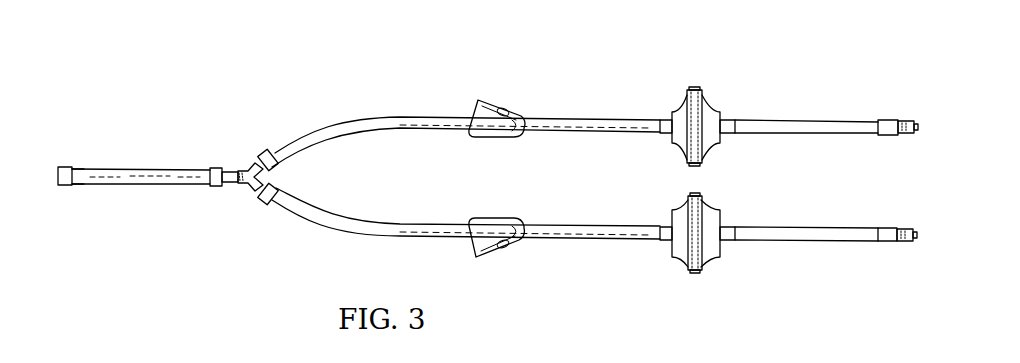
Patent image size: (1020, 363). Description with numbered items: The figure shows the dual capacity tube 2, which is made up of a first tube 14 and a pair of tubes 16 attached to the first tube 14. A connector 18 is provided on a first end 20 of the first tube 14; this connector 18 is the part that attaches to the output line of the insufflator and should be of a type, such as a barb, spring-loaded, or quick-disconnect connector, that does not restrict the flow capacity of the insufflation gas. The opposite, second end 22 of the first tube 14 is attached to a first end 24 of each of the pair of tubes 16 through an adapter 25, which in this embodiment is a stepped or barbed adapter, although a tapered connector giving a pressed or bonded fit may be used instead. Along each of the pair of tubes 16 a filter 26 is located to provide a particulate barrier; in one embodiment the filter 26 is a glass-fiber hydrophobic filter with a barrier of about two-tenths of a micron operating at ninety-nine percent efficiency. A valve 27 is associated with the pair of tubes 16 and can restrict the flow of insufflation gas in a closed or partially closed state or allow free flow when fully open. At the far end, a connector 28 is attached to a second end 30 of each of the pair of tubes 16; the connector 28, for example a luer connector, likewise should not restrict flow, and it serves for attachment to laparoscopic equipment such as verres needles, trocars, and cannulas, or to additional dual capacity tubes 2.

The dual capacity tube 2 is at (305, 107).
The first tube 14 is at (133, 168).
The pair of tubes 16 is at (582, 117).
The connector 18 is at (65, 168).
The first end 20 is at (74, 184).
The second end 22 is at (213, 186).
The first end 24 is at (268, 152).
The adapter 25 is at (246, 170).
The filter 26 is at (705, 111).
The valve 27 is at (493, 100).
The connector 28 is at (905, 136).
The second end 30 is at (886, 120).